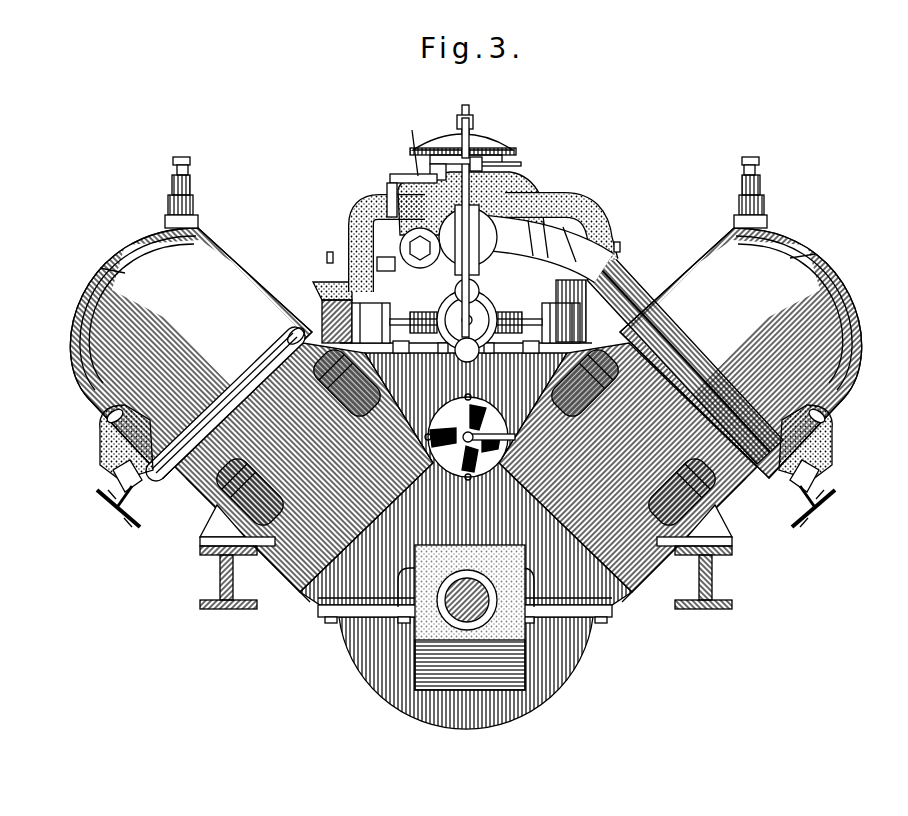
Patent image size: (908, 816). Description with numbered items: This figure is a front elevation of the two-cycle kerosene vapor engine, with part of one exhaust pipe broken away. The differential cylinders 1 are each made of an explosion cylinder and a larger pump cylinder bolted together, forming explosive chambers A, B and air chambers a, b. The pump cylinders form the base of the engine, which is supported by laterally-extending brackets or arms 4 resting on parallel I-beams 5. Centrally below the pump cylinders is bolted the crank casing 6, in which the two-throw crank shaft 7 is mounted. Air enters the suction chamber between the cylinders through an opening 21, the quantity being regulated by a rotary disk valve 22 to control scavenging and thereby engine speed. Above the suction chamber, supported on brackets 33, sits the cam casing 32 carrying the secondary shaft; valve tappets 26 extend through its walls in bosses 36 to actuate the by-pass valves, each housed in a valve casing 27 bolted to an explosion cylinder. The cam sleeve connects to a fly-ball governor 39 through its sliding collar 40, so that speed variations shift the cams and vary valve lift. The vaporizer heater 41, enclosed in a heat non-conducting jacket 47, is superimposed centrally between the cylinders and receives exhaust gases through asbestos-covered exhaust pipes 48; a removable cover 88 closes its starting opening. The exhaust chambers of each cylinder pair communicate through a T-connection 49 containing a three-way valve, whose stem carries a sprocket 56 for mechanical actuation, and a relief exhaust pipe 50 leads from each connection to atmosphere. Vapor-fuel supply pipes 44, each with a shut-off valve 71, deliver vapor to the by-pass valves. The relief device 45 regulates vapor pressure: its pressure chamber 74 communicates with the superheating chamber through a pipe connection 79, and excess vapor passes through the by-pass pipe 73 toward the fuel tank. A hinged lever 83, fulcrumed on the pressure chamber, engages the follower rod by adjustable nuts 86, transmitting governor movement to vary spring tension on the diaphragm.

The cylinders 1 is at (80, 328).
The brackets or arms 4 is at (207, 540).
The I-beams 5 is at (228, 609).
The crank casing 6 is at (474, 722).
The crank shaft 7 is at (500, 598).
The opening 21 is at (466, 437).
The rotary disk valve 22 is at (472, 452).
The valve tappets 26 is at (563, 240).
The valve casing 27 is at (328, 295).
The cam casing 32 is at (518, 230).
The brackets 33 is at (420, 335).
The bosses 36 is at (424, 355).
The fly-ball governor 39 is at (455, 293).
The sliding collar 40 is at (481, 320).
The heater 41 is at (493, 212).
The vapor-fuel supply pipes 44 is at (362, 210).
The relief device 45 is at (446, 132).
The heat non-conducting jacket 47 is at (418, 228).
The exhaust pipes 48 is at (347, 248).
The T-connection 49 is at (115, 475).
The relief exhaust pipe 50 is at (100, 438).
The sprocket 56 is at (118, 507).
The shut-off valve 71 is at (618, 248).
The by-pass connection or pipe 73 is at (432, 168).
The pressure chamber 74 is at (497, 160).
The pipe connection 79 is at (412, 130).
The lever 83 is at (474, 140).
The adjustable nuts 86 is at (466, 112).
The removable cover 88 is at (392, 215).
The explosive chamber A is at (100, 268).
The explosive chamber B is at (815, 254).
The air chamber a is at (305, 556).
The air chamber b is at (645, 556).